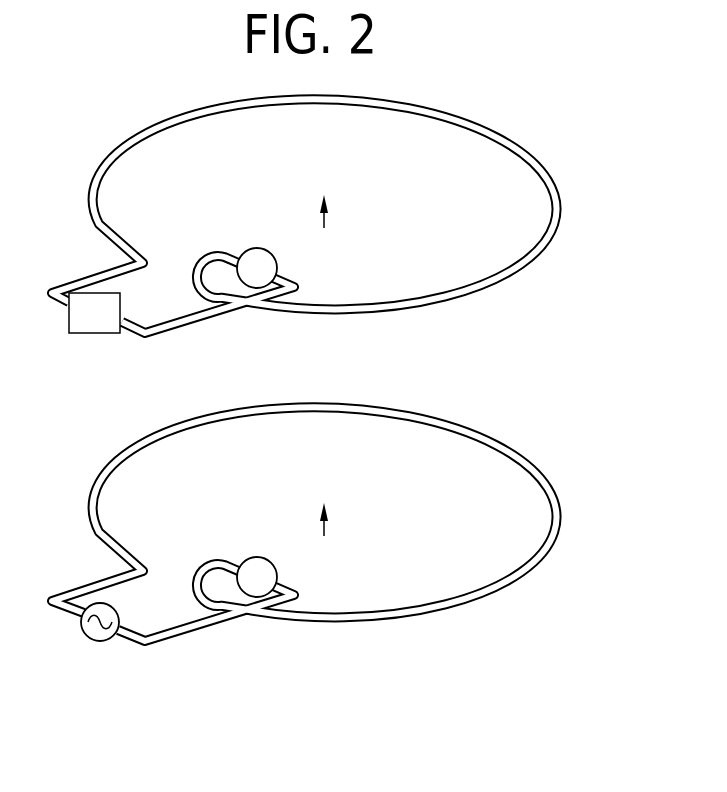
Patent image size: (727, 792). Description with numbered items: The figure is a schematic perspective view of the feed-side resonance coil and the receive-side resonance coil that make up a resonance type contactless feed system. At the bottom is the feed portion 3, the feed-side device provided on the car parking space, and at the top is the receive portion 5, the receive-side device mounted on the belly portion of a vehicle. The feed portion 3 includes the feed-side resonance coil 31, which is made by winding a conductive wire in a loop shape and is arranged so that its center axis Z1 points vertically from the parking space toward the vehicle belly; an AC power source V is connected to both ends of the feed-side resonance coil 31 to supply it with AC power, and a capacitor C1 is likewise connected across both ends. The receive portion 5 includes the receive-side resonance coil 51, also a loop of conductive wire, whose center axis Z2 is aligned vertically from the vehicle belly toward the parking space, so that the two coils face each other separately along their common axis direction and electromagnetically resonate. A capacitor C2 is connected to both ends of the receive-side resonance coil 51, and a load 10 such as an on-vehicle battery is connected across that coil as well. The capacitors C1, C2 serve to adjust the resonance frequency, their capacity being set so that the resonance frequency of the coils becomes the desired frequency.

The feed portion 3 is at (347, 589).
The receive portion 5 is at (347, 435).
The load 10 is at (93, 333).
The feed-side resonance coil 31 is at (553, 543).
The receive-side resonance coil 51 is at (553, 235).
The capacitor C1 is at (257, 577).
The capacitor C2 is at (257, 268).
The AC power source V is at (105, 643).
The center axis Z1 is at (327, 526).
The center axis Z2 is at (327, 218).